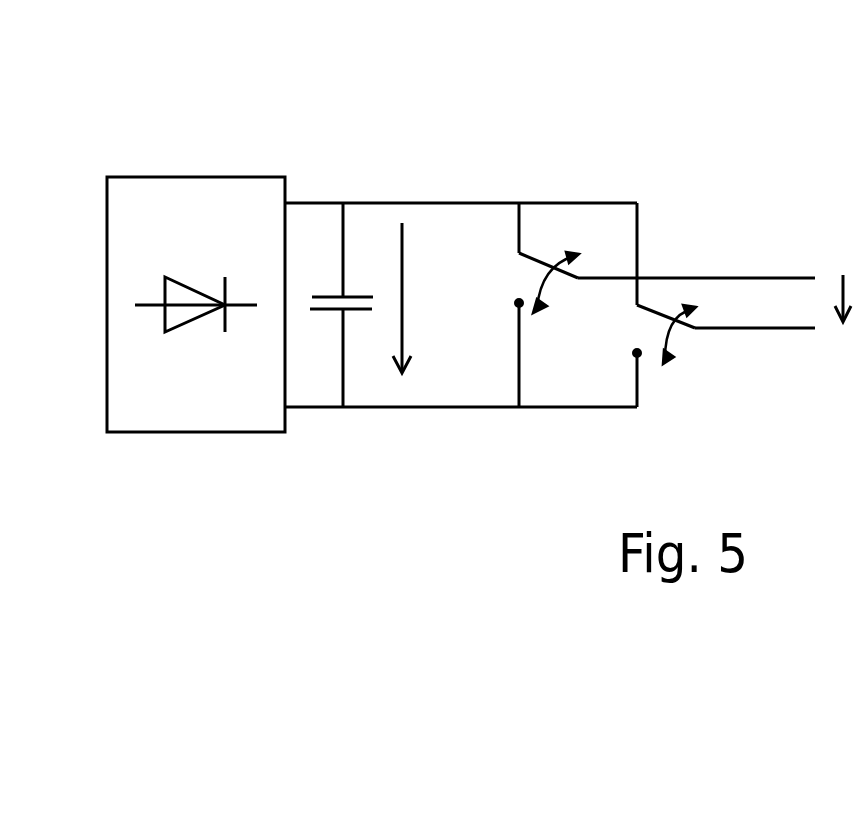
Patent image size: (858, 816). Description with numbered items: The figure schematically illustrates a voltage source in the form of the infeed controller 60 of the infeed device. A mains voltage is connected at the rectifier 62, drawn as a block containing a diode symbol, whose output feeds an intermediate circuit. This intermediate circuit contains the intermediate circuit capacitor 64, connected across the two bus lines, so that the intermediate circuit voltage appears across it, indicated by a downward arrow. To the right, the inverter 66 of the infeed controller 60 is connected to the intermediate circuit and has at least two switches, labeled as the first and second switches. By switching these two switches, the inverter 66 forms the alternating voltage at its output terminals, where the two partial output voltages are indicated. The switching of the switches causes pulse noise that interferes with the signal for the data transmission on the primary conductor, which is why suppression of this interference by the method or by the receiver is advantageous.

The infeed controller 60 is at (447, 135).
The rectifier 62 is at (162, 205).
The intermediate circuit capacitor 64 is at (360, 325).
The inverter 66 is at (612, 205).